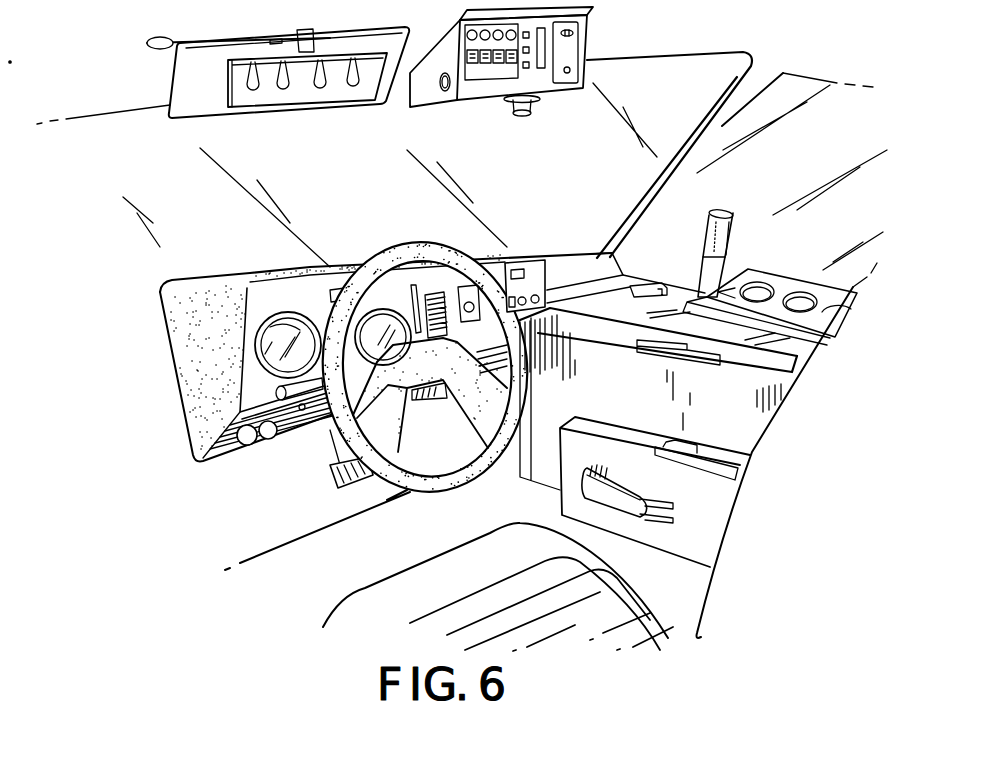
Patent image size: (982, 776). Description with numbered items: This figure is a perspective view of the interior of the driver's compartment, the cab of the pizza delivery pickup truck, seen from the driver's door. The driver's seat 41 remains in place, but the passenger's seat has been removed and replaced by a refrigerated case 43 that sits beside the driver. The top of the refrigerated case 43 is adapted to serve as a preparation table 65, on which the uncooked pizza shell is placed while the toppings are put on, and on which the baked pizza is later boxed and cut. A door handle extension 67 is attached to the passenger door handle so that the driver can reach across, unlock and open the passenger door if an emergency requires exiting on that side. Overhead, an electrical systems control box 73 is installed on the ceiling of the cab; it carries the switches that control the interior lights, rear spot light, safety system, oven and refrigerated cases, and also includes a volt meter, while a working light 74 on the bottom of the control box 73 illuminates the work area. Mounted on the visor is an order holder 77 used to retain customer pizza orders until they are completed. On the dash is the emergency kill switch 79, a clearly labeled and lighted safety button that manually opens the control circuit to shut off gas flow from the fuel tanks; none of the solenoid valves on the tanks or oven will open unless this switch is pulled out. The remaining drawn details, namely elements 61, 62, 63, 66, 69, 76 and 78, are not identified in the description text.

The driver's seat 41 is at (400, 590).
The refrigerated case 43 is at (583, 363).
The console housing 61 is at (772, 412).
The trim rail 62 is at (785, 360).
The access door 63 is at (708, 513).
The preparation table 65 is at (653, 307).
The handle 66 is at (620, 462).
The door handle extension 67 is at (733, 232).
The cup holder tray 69 is at (787, 280).
The electrical systems control box 73 is at (587, 43).
The working light 74 is at (533, 107).
The instrument module 76 is at (533, 268).
The order holder 77 is at (287, 100).
The sun visor 78 is at (375, 97).
The emergency kill switch 79 is at (258, 446).